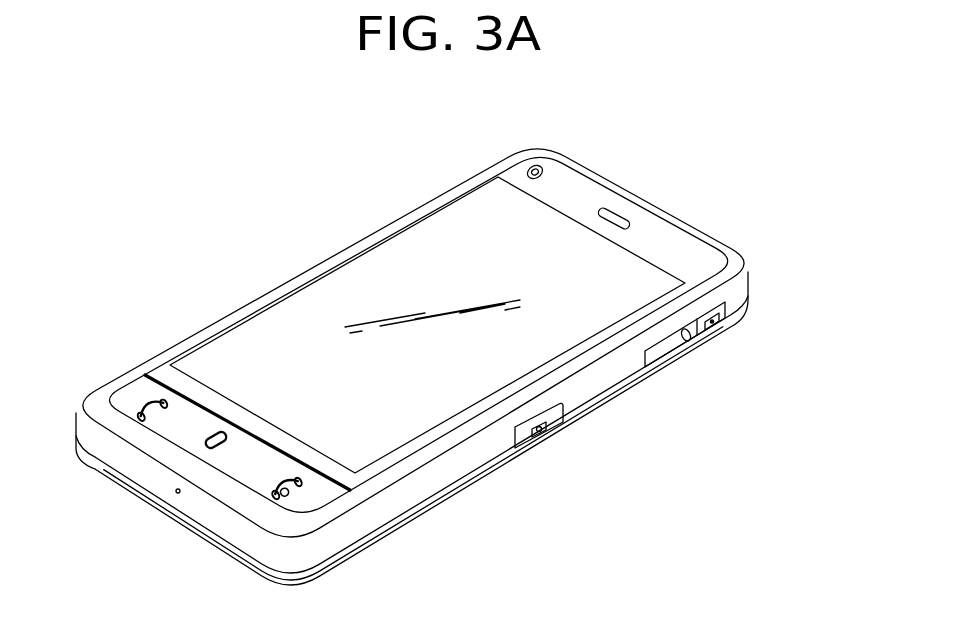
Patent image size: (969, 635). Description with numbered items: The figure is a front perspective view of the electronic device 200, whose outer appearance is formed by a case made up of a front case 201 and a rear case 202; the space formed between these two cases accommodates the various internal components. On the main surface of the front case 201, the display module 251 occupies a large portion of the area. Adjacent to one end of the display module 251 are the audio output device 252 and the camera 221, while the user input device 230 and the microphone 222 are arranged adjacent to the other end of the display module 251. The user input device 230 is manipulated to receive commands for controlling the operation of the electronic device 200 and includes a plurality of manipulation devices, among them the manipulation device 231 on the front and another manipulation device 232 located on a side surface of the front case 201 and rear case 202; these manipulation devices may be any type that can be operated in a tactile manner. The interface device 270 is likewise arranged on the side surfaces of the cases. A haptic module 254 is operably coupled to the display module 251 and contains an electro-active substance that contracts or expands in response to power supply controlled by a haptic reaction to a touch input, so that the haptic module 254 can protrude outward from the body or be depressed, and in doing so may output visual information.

The electronic device 200 is at (255, 250).
The front case 201 is at (746, 268).
The rear case 202 is at (745, 299).
The camera 221 is at (543, 168).
The microphone 222 is at (176, 494).
The user input device 230 is at (166, 380).
The manipulation device 231 is at (147, 394).
The manipulation device 232 is at (556, 420).
The display module 251 is at (390, 262).
The audio output device 252 is at (616, 212).
The haptic module 254 is at (466, 217).
The interface device 270 is at (667, 348).